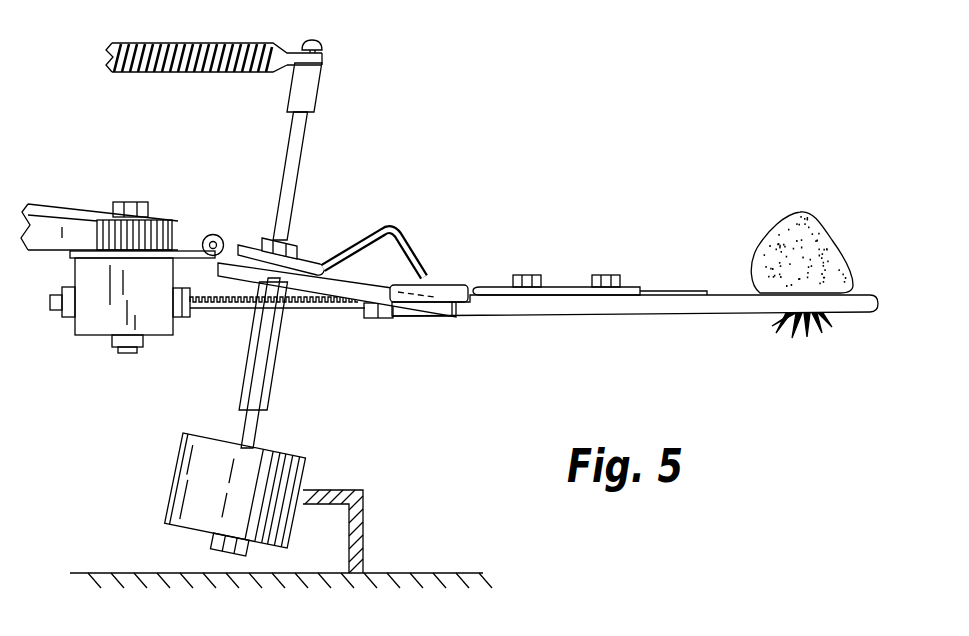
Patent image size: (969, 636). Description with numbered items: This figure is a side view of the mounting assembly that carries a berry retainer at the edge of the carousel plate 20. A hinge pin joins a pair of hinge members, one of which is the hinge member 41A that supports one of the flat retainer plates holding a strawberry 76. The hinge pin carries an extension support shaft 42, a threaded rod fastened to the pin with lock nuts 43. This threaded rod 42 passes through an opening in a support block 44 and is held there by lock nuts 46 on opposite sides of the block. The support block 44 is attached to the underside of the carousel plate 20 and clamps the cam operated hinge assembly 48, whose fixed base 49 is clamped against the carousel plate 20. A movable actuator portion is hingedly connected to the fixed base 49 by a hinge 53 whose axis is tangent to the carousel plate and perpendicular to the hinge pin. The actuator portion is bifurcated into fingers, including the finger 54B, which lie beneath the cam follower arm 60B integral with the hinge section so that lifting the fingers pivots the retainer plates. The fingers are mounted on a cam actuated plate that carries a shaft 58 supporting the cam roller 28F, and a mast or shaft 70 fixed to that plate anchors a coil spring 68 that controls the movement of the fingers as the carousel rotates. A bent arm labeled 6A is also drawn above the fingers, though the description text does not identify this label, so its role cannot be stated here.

The carousel plate 20 is at (46, 210).
The cam roller 28F is at (307, 471).
The hinge member 41A is at (647, 316).
The extension support shaft 42 is at (228, 308).
The lock nuts 43 is at (378, 318).
The support block 44 is at (90, 325).
The lock nuts 46 is at (63, 287).
The cam operated hinge assembly 48 is at (190, 238).
The fixed base 49 is at (93, 250).
The hinge 53 is at (217, 240).
The finger 54B is at (428, 312).
The shaft 58 is at (270, 377).
The cam follower arm 60B is at (450, 283).
The arm 6A is at (385, 226).
The coil spring 68 is at (198, 54).
The mast or shaft 70 is at (302, 151).
The strawberry 76 is at (808, 231).